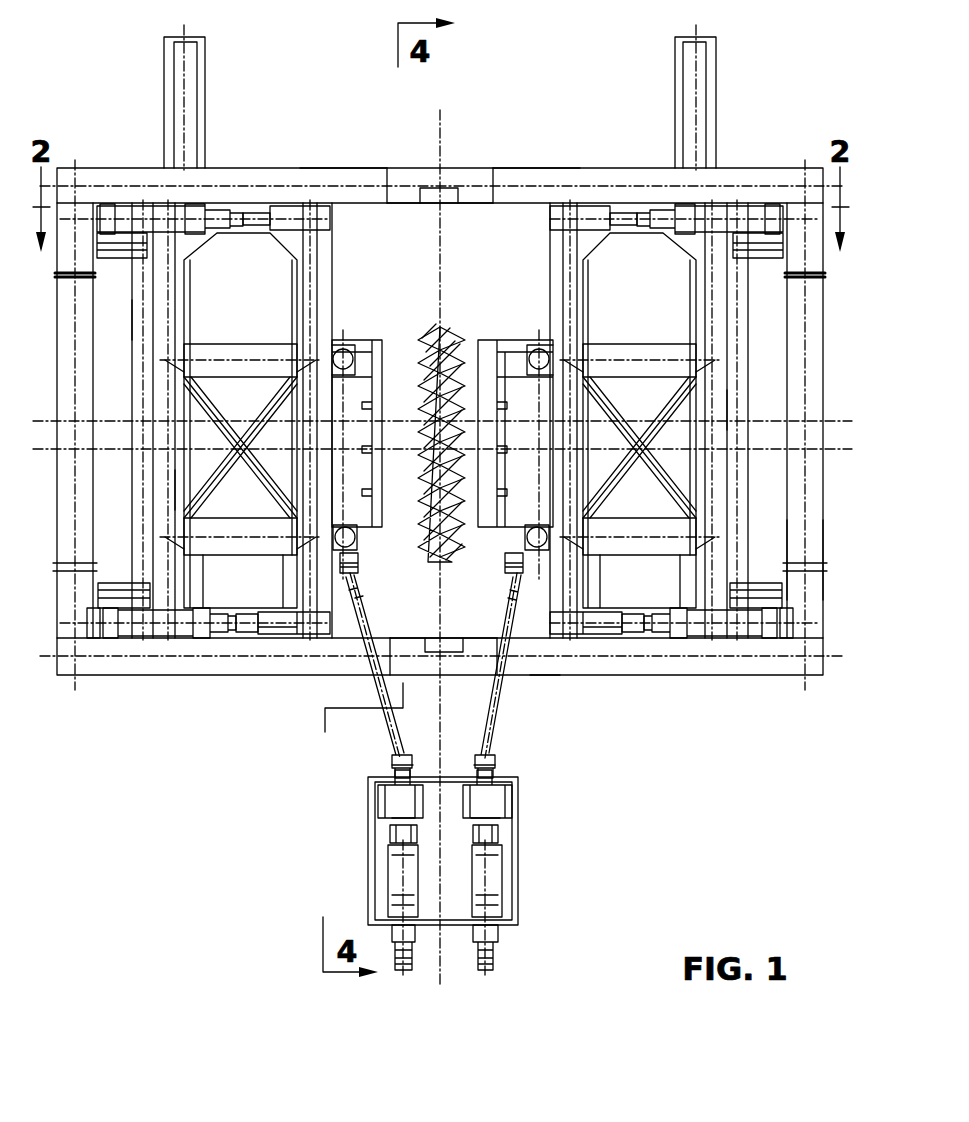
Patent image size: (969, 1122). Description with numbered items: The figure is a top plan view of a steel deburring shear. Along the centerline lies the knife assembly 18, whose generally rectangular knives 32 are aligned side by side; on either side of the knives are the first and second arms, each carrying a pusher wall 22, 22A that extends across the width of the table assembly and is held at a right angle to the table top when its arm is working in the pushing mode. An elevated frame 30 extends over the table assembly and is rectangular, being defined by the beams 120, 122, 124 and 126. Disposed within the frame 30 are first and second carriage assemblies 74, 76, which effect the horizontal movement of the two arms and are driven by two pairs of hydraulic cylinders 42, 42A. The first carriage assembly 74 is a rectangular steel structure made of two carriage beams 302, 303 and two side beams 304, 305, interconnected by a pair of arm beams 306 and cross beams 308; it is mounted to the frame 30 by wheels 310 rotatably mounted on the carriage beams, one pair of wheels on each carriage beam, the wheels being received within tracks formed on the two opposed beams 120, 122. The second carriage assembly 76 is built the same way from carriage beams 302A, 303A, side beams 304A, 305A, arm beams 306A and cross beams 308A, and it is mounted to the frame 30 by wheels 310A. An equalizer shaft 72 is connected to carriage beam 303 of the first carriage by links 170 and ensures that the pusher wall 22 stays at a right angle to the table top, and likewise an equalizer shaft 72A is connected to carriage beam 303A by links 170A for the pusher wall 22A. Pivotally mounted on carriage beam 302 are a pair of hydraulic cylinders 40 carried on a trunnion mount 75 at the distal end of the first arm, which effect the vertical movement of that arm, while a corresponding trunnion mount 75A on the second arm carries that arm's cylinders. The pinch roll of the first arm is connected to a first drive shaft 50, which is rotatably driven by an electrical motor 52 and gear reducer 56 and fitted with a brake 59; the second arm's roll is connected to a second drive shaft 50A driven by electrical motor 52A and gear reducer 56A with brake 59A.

The knife assembly 18 is at (460, 542).
The pusher wall 22 is at (383, 353).
The pusher wall 22A is at (478, 340).
The elevated frame 30 is at (455, 132).
The knives 32 is at (497, 200).
The hydraulic cylinders 40 is at (345, 345).
The hydraulic cylinders 42 is at (172, 212).
The hydraulic cylinders 42A is at (740, 213).
The first drive shaft 50 is at (390, 717).
The second drive shaft 50A is at (498, 718).
The electrical motor 52 is at (393, 868).
The electrical motor 52A is at (493, 877).
The gear reducer 56 is at (390, 800).
The gear reducer 56A is at (510, 803).
The brake 59 is at (390, 832).
The brake 59A is at (500, 832).
The equalizer shaft 72 is at (138, 332).
The equalizer shaft 72A is at (747, 552).
The first carriage assembly 74 is at (168, 495).
The trunnion mount 75 is at (350, 373).
The trunnion mount 75A is at (527, 367).
The second carriage assembly 76 is at (725, 408).
The beam 120 is at (368, 178).
The beam 122 is at (330, 676).
The beam 124 is at (827, 547).
The beam 126 is at (92, 375).
The links 170 is at (127, 233).
The links 170A is at (768, 222).
The carriage beam 302 is at (330, 272).
The carriage beam 302A is at (547, 250).
The carriage beam 303 is at (165, 238).
The carriage beam 303A is at (700, 273).
The side beam 304 is at (372, 178).
The side beam 304A is at (583, 200).
The side beam 305 is at (322, 676).
The side beam 305A is at (577, 640).
The arm beams 306 is at (232, 355).
The arm beams 306A is at (615, 352).
The cross beams 308 is at (233, 475).
The cross beams 308A is at (688, 335).
The wheels 310 is at (307, 206).
The wheels 310A is at (588, 217).